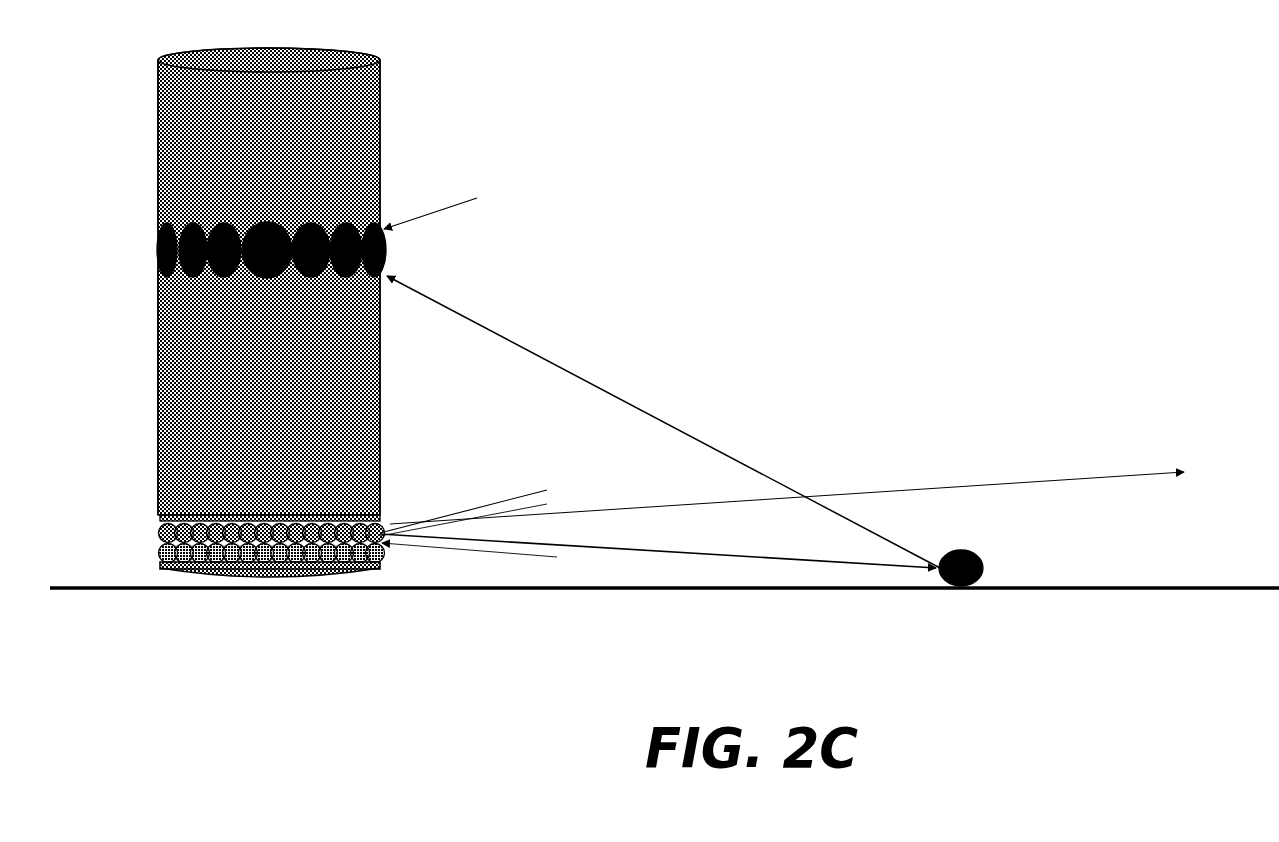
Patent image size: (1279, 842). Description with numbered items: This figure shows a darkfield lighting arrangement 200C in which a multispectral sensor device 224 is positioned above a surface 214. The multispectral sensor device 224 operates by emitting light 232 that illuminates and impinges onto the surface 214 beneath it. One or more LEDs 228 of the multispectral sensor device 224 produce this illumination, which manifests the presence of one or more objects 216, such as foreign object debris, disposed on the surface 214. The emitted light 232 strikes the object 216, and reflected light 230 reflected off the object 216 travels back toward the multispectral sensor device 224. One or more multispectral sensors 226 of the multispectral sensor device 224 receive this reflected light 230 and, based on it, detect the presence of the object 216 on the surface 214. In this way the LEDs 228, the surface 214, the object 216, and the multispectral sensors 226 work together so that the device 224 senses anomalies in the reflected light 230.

The multispectral sensing system 200C is at (1075, 60).
The multispectral sensor device 224 is at (160, 152).
The multispectral sensors 226 is at (158, 240).
The LEDs 228 is at (163, 540).
The surface 214 is at (1278, 586).
The objects 216 is at (983, 568).
The reflected light 230 is at (823, 407).
The emitted light 232 is at (782, 497).